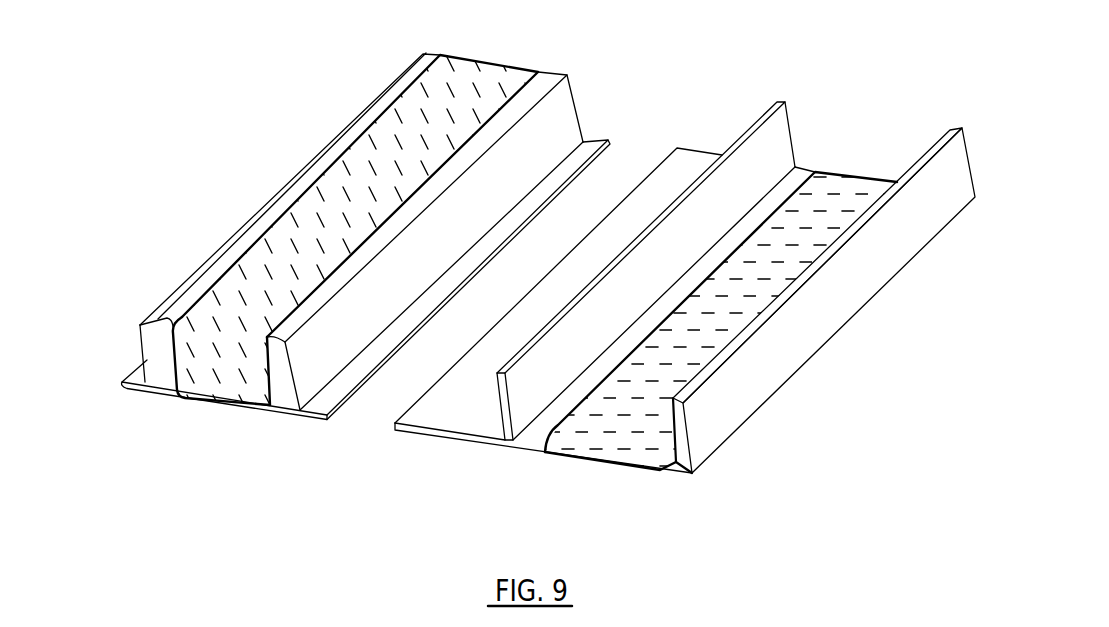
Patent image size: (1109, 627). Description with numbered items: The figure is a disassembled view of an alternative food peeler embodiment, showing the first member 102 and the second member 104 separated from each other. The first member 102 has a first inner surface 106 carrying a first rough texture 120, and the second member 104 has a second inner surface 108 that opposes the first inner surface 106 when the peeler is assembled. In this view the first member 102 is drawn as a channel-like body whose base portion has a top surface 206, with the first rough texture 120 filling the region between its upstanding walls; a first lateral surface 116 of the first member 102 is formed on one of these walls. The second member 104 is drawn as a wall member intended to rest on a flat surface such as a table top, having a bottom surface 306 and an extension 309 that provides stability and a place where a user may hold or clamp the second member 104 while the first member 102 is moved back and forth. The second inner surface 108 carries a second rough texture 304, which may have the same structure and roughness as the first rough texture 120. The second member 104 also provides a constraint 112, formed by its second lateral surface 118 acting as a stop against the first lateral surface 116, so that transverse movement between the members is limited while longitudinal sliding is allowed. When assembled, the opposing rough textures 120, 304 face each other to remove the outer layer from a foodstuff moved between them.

The first member 102 is at (167, 184).
The second member 104 is at (922, 312).
The first inner surface 106 is at (345, 145).
The second inner surface 108 is at (535, 432).
The constraint 112 is at (777, 100).
The first lateral surface 116 is at (300, 357).
The second lateral surface 118 is at (765, 157).
The first rough texture 120 is at (367, 187).
The top surface 206 is at (587, 147).
The second rough texture 304 is at (587, 437).
The bottom surface 306 is at (676, 476).
The extension 309 is at (685, 172).